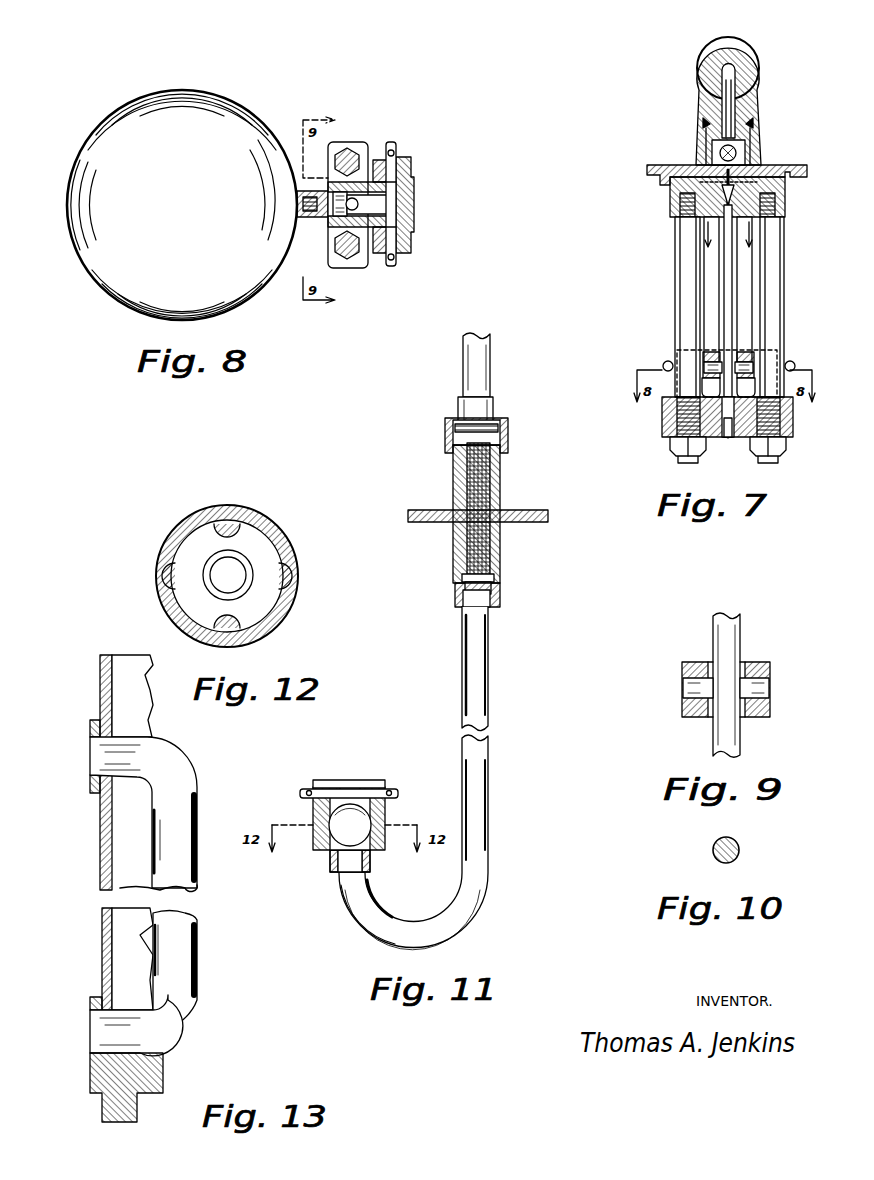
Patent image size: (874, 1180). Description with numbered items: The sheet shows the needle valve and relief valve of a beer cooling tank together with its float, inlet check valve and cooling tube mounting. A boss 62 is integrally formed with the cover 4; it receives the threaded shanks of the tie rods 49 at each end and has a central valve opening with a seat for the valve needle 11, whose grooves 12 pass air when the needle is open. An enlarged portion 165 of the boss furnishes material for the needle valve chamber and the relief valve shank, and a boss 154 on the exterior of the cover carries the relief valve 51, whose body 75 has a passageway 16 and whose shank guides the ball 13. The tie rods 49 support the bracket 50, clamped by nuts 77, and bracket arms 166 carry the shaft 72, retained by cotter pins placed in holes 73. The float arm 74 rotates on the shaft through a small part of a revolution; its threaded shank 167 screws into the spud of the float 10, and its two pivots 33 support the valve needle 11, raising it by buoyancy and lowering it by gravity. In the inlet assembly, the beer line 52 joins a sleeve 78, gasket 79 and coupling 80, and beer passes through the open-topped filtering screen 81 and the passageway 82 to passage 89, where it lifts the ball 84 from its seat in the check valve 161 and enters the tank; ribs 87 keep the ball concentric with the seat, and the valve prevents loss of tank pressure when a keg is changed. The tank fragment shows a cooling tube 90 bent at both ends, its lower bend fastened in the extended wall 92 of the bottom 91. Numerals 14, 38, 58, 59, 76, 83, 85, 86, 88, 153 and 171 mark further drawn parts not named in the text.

In FIG. 7, the cover 4 is at (652, 162).
In FIG. 11, the cover 4 is at (524, 512).
In FIG. 7, the float 10 is at (730, 289).
In FIG. 8, the float 10 is at (250, 132).
In FIG. 7, the valve needle 11 is at (733, 307).
In FIG. 8, the valve needle 11 is at (369, 204).
In FIG. 9, the valve needle 11 is at (728, 636).
In FIG. 7, the grooves 12 is at (725, 210).
In FIG. 10, the grooves 12 is at (737, 846).
In FIG. 7, the ball 13 is at (737, 158).
In FIG. 7, the chamber 14 is at (710, 151).
In FIG. 7, the passageway 16 is at (732, 70).
In FIG. 7, the pivots 33 is at (756, 368).
In FIG. 8, the pivots 33 is at (345, 222).
In FIG. 9, the pivots 33 is at (684, 688).
In FIG. 13, the pipe fitting 38 is at (90, 720).
In FIG. 7, the tie rods 49 is at (672, 265).
In FIG. 8, the tie rods 49 is at (345, 152).
In FIG. 7, the bracket 50 is at (662, 421).
In FIG. 8, the bracket 50 is at (362, 148).
In FIG. 7, the relief valve 51 is at (720, 41).
In FIG. 11, the beer line 52 is at (492, 358).
In FIG. 11, the lower nut 58 is at (500, 598).
In FIG. 11, the gasket 59 is at (496, 580).
In FIG. 7, the boss 62 is at (672, 204).
In FIG. 7, the shaft 72 is at (662, 366).
In FIG. 8, the shaft 72 is at (397, 150).
In FIG. 8, the holes 73 is at (395, 156).
In FIG. 7, the float arm 74 is at (750, 355).
In FIG. 8, the float arm 74 is at (415, 200).
In FIG. 9, the float arm 74 is at (692, 664).
In FIG. 7, the body 75 is at (698, 77).
In FIG. 7, the neck 76 is at (756, 120).
In FIG. 7, the nuts 77 is at (676, 448).
In FIG. 11, the sleeve 78 is at (495, 400).
In FIG. 11, the gasket 79 is at (508, 425).
In FIG. 11, the coupling 80 is at (508, 436).
In FIG. 11, the filtering screen 81 is at (492, 545).
In FIG. 11, the passageway 82 is at (490, 676).
In FIG. 11, the clamp body 83 is at (386, 817).
In FIG. 12, the clamp body 83 is at (268, 528).
In FIG. 11, the ball 84 is at (352, 820).
In FIG. 11, the cross bar 85 is at (398, 792).
In FIG. 11, the pin 86 is at (306, 797).
In FIG. 11, the guides or ribs 87 is at (345, 790).
In FIG. 12, the guides or ribs 87 is at (236, 528).
In FIG. 11, the stem 88 is at (330, 853).
In FIG. 12, the stem 88 is at (250, 562).
In FIG. 11, the passage 89 is at (372, 866).
In FIG. 12, the passage 89 is at (240, 576).
In FIG. 13, the cooling tube 90 is at (180, 765).
In FIG. 13, the bottom 91 is at (90, 1076).
In FIG. 13, the extended wall 92 is at (90, 997).
In FIG. 11, the housing 153 is at (452, 480).
In FIG. 7, the boss 154 is at (700, 132).
In FIG. 11, the check valve 161 is at (318, 782).
In FIG. 7, the enlarged portion 165 is at (700, 184).
In FIG. 7, the bracket arms 166 is at (677, 352).
In FIG. 8, the bracket arms 166 is at (414, 247).
In FIG. 8, the threaded shank 167 is at (306, 218).
In FIG. 11, the chamber 171 is at (464, 586).